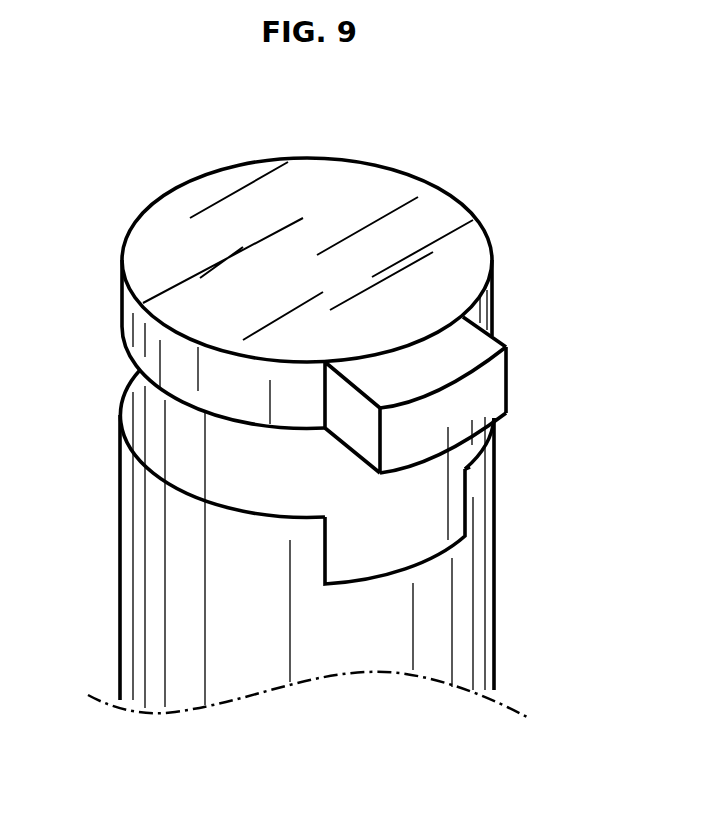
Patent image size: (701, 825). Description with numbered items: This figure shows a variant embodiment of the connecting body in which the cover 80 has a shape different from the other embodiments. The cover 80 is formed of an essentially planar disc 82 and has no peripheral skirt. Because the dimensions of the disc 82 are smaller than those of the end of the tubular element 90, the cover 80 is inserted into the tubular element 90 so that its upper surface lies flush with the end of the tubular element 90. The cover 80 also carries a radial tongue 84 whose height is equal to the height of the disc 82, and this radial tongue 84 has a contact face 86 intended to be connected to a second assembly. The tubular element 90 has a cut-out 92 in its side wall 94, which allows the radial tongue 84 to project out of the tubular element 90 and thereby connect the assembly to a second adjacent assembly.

The cover 80 is at (172, 175).
The disc 82 is at (363, 197).
The radial tongue 84 is at (524, 375).
The contact face 86 is at (467, 388).
The tubular element 90 is at (186, 611).
The cut-out 92 is at (424, 530).
The side wall 94 is at (187, 562).